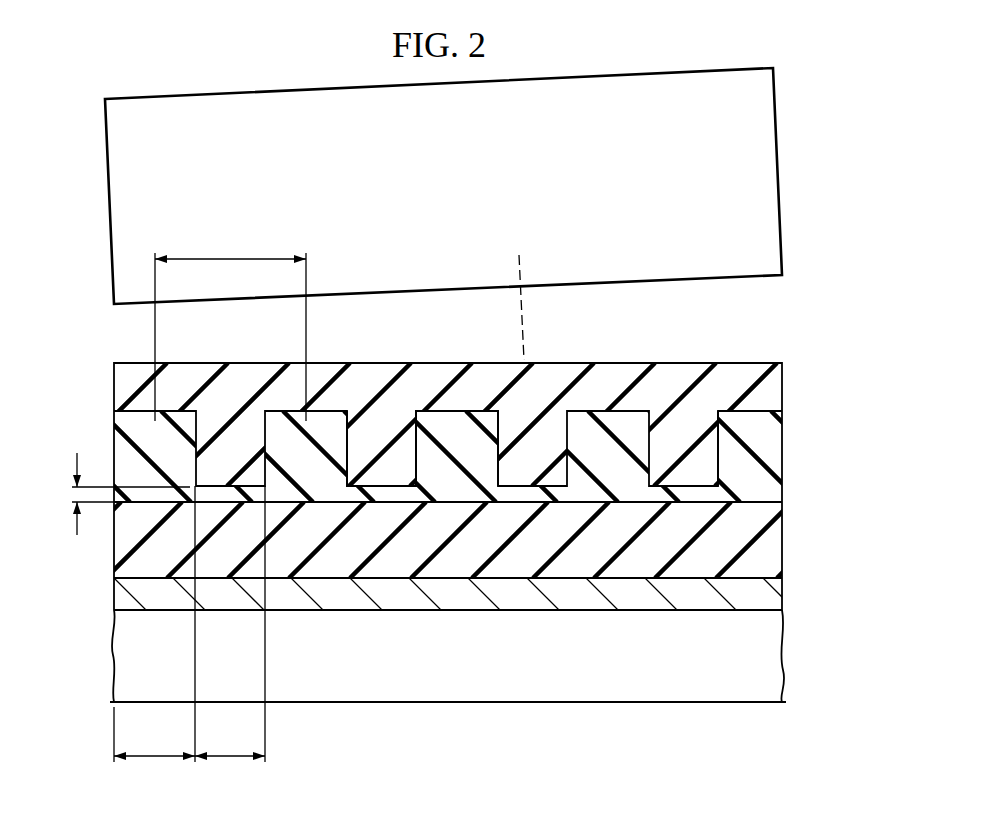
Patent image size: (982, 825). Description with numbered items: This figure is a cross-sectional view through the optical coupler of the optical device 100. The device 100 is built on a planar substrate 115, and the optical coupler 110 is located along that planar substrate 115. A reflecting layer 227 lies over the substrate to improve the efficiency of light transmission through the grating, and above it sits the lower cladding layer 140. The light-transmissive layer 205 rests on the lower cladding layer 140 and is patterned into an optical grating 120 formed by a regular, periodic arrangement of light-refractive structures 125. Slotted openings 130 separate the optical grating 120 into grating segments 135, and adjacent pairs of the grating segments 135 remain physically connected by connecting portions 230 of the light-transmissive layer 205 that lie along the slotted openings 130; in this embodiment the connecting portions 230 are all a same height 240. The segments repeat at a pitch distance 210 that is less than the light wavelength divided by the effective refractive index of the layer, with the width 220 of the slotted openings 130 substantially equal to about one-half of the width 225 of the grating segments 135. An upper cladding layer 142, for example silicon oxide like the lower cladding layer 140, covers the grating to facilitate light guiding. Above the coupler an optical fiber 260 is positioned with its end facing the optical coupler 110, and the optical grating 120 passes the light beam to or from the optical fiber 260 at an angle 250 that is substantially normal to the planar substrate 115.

The optical device 100 is at (254, 57).
The optical coupler 110 is at (797, 307).
The planar substrate 115 is at (788, 657).
The optical grating 120 is at (614, 372).
The light-refractive structures 125 is at (749, 407).
The slotted openings 130 is at (381, 406).
The grating segments 135 is at (456, 398).
The lower cladding layer 140 is at (773, 540).
The upper cladding layer 142 is at (117, 382).
The light-transmissive layer 205 is at (790, 413).
The pitch distance 210 is at (230, 257).
The width of the slotted openings 220 is at (228, 762).
The width of the grating segments 225 is at (155, 762).
The reflecting layer 227 is at (121, 596).
The connecting portions 230 is at (533, 492).
The height 240 is at (76, 522).
The angle 250 is at (477, 352).
The optical fiber 260 is at (781, 170).